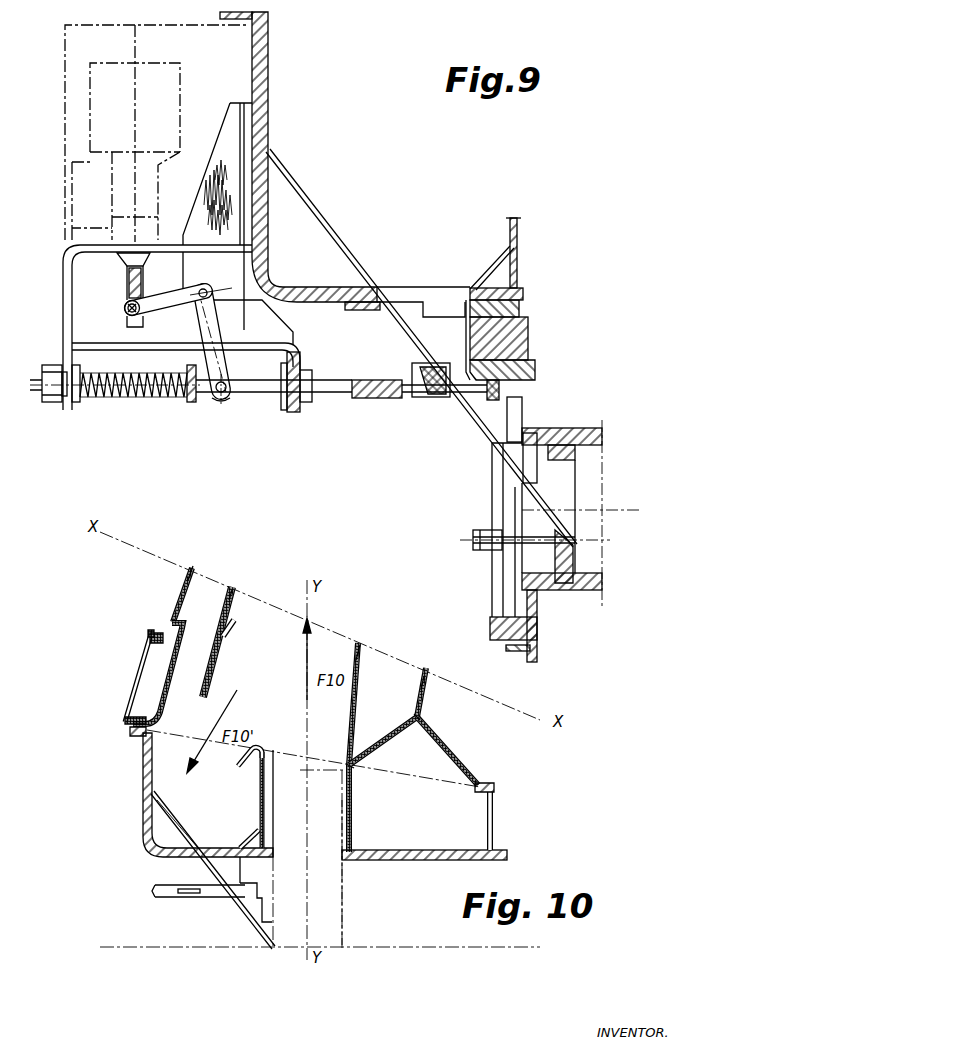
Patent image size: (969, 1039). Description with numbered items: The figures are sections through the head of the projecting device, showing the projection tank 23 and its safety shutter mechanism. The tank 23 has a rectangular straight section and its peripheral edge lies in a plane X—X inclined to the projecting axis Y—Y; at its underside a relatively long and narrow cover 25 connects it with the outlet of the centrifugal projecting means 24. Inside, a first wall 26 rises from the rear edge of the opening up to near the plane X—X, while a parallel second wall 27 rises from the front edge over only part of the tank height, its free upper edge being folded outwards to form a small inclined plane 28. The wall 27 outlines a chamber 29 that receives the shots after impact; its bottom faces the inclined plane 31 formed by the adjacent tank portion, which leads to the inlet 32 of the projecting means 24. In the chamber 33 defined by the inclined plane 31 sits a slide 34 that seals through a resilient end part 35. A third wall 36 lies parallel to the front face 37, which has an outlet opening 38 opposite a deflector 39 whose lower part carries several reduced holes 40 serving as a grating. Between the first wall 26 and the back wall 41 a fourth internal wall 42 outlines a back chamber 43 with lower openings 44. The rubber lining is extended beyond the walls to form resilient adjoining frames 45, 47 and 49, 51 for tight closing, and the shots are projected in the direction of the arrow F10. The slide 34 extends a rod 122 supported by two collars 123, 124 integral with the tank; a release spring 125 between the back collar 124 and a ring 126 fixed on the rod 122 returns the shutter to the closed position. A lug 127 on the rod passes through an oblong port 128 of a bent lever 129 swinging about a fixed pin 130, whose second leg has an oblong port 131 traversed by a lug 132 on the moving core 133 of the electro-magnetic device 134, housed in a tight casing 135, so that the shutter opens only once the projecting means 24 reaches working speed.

In FIG. 9, the tank 23 is at (322, 130).
In FIG. 10, the rotating projecting means 24 is at (342, 913).
In FIG. 10, the cover 25 is at (270, 858).
In FIG. 10, the first wall 26 is at (362, 692).
In FIG. 10, the second wall 27 is at (258, 806).
In FIG. 10, the small inclined plane 28 is at (247, 768).
In FIG. 9, the chamber 29 is at (410, 314).
In FIG. 10, the chamber 29 is at (163, 790).
In FIG. 10, the inclined plane 31 is at (213, 851).
In FIG. 9, the inlet 32 is at (590, 497).
In FIG. 9, the chamber 33 is at (483, 413).
In FIG. 10, the chamber 33 is at (257, 915).
In FIG. 9, the slide 34 is at (462, 407).
In FIG. 10, the slide 34 is at (213, 893).
In FIG. 9, the resilient end part 35 is at (537, 382).
In FIG. 10, the third wall 36 is at (220, 660).
In FIG. 10, the front face 37 is at (175, 603).
In FIG. 10, the outlet opening 38 is at (148, 663).
In FIG. 10, the deflector 39 is at (162, 690).
In FIG. 10, the holes 40 is at (150, 708).
In FIG. 10, the back wall 41 is at (422, 706).
In FIG. 10, the fourth internal wall 42 is at (393, 744).
In FIG. 10, the back chamber 43 is at (398, 672).
In FIG. 10, the lower openings 44 is at (350, 762).
In FIG. 10, the resilient frame 45 is at (194, 578).
In FIG. 10, the resilient frame 47 is at (409, 700).
In FIG. 10, the resilient frame 49 is at (232, 590).
In FIG. 10, the resilient frame 51 is at (356, 665).
In FIG. 9, the rod 122 is at (262, 395).
In FIG. 9, the collar 123 is at (310, 405).
In FIG. 9, the back collar 124 is at (72, 410).
In FIG. 9, the release spring 125 is at (138, 400).
In FIG. 9, the ring 126 is at (190, 403).
In FIG. 9, the lug 127 is at (222, 410).
In FIG. 9, the oblong port 128 is at (231, 401).
In FIG. 9, the bent lever 129 is at (200, 328).
In FIG. 9, the fixed pin 130 is at (208, 288).
In FIG. 9, the oblong port 131 is at (124, 313).
In FIG. 9, the lug 132 is at (124, 309).
In FIG. 9, the moving core 133 is at (118, 288).
In FIG. 9, the electro-magnetic device 134 is at (152, 70).
In FIG. 9, the tight casing 135 is at (244, 60).